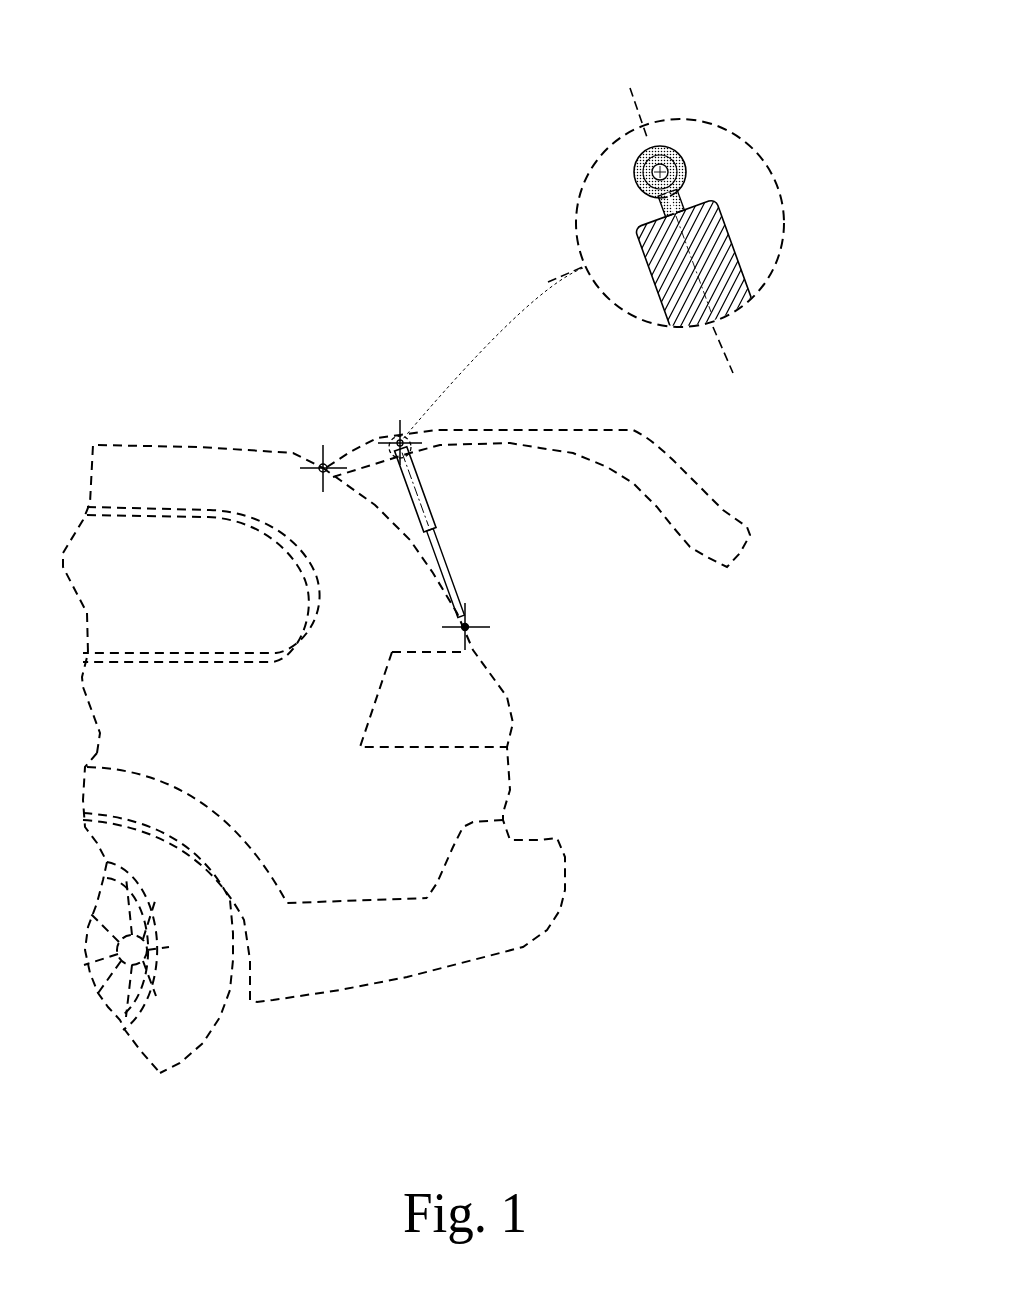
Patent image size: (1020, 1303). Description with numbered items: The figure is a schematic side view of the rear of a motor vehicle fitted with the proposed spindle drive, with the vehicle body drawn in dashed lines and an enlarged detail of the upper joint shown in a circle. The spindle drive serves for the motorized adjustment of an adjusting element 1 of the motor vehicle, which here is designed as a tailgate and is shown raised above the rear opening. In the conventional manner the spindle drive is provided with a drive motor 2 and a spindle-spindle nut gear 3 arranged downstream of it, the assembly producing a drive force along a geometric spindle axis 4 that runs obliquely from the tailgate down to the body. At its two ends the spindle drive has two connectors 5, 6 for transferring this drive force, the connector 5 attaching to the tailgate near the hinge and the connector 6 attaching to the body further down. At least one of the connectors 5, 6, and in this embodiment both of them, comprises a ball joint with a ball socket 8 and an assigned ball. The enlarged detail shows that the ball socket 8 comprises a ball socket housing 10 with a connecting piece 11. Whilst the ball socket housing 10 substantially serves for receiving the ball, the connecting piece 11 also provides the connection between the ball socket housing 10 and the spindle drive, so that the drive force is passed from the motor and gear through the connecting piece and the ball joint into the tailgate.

The adjusting element 1 is at (698, 507).
The drive motor 2 is at (450, 554).
The spindle-spindle nut gear 3 is at (430, 501).
The geometric spindle axis 4 is at (473, 647).
The connector 5 is at (400, 438).
The connector 6 is at (470, 613).
The ball socket 8 is at (687, 172).
The ball socket housing 10 is at (687, 172).
The connecting piece 11 is at (687, 199).